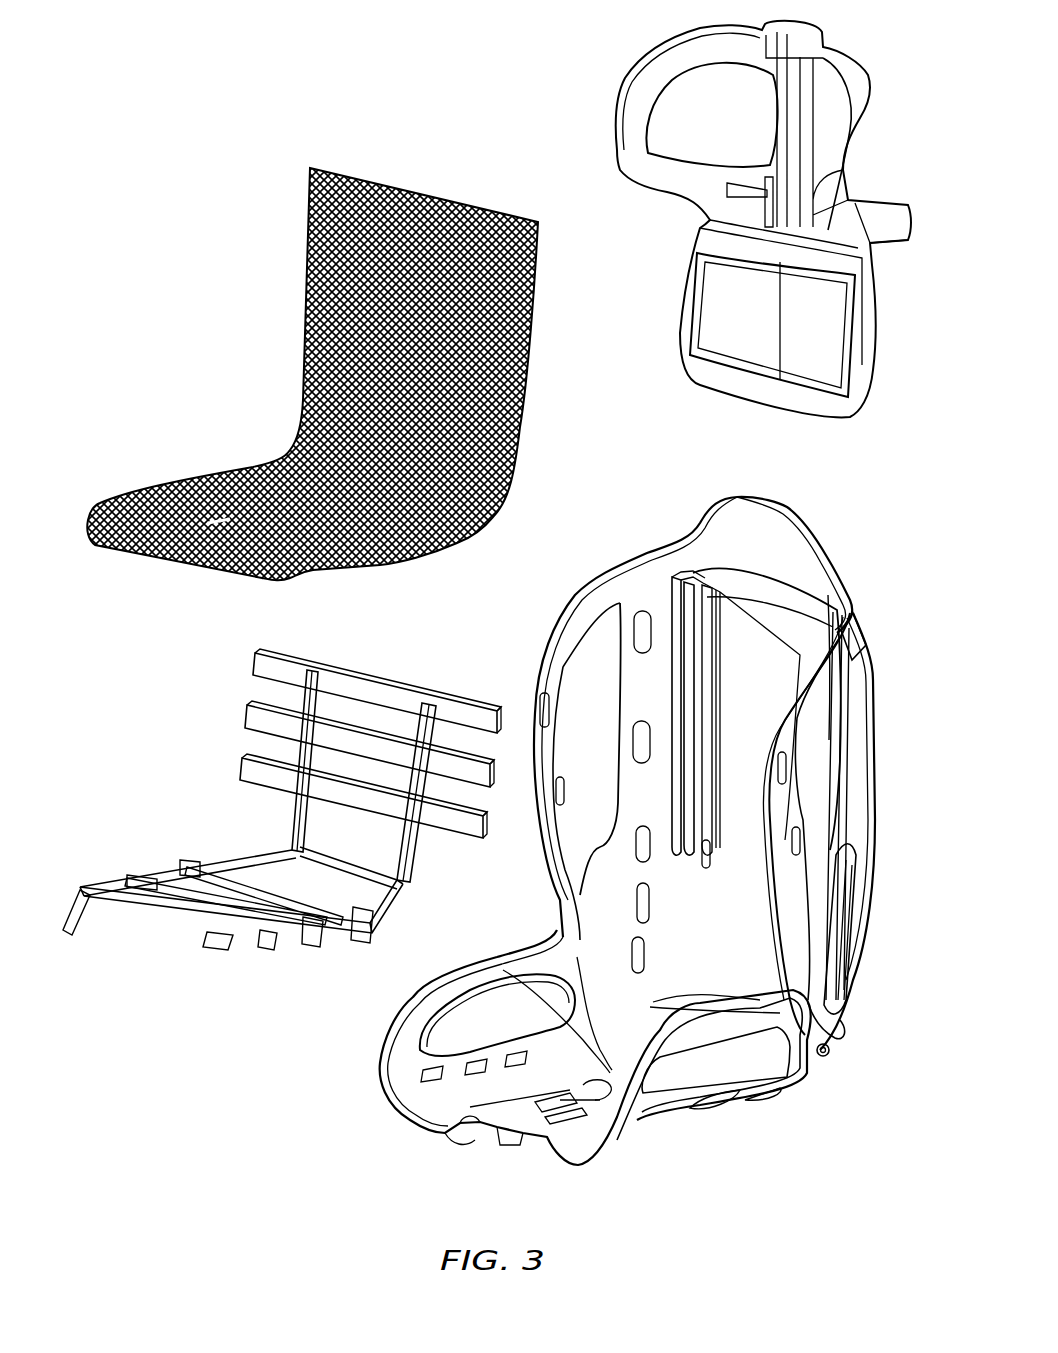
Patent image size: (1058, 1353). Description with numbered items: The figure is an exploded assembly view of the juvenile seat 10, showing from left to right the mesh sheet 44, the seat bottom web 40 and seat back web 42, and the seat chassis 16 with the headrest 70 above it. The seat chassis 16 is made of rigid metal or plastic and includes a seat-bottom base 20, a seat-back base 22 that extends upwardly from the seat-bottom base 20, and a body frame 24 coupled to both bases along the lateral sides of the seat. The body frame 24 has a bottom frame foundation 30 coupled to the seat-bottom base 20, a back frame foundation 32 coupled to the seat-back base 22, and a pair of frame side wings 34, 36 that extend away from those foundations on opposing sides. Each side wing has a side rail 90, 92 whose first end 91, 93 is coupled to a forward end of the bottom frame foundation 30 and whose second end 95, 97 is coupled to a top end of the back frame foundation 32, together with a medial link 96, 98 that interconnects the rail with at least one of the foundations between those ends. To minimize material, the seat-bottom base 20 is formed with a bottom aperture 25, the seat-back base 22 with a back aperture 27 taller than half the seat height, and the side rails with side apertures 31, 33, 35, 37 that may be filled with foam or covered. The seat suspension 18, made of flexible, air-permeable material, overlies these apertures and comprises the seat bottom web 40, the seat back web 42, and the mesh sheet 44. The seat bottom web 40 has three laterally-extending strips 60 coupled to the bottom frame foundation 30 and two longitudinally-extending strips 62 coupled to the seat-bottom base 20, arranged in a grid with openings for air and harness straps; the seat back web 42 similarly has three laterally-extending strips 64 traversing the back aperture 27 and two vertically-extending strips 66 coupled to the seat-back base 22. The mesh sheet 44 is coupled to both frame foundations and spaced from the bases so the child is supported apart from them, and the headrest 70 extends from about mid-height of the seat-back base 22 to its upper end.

The juvenile seat 10 is at (228, 65).
The seat chassis 16 is at (622, 816).
The seat suspension 18 is at (304, 374).
The seat-bottom base 20 is at (547, 1039).
The seat-back base 22 is at (726, 797).
The body frame 24 is at (650, 530).
The bottom aperture 25 is at (600, 1085).
The back aperture 27 is at (750, 930).
The bottom frame foundation 30 is at (400, 1090).
The side aperture 31 is at (730, 1105).
The back frame foundation 32 is at (833, 830).
The side aperture 33 is at (467, 1025).
The frame side wing 34 is at (858, 652).
The side aperture 35 is at (800, 760).
The frame side wing 36 is at (548, 612).
The side aperture 37 is at (595, 690).
The seat bottom web 40 is at (291, 813).
The seat back web 42 is at (215, 705).
The mesh sheet 44 is at (250, 355).
The laterally-extending strips 60 is at (322, 920).
The longitudinally-extending strips 62 is at (170, 915).
The laterally-extending strips 64 is at (495, 725).
The vertically-extending strips 66 is at (312, 672).
The headrest 70 is at (600, 80).
The side rail 90 is at (808, 903).
The first end 91 is at (620, 1140).
The side rail 92 is at (565, 865).
The first end 93 is at (378, 1052).
The second end 95 is at (840, 657).
The medial link 96 is at (818, 1056).
The second end 97 is at (625, 580).
The medial link 98 is at (540, 975).